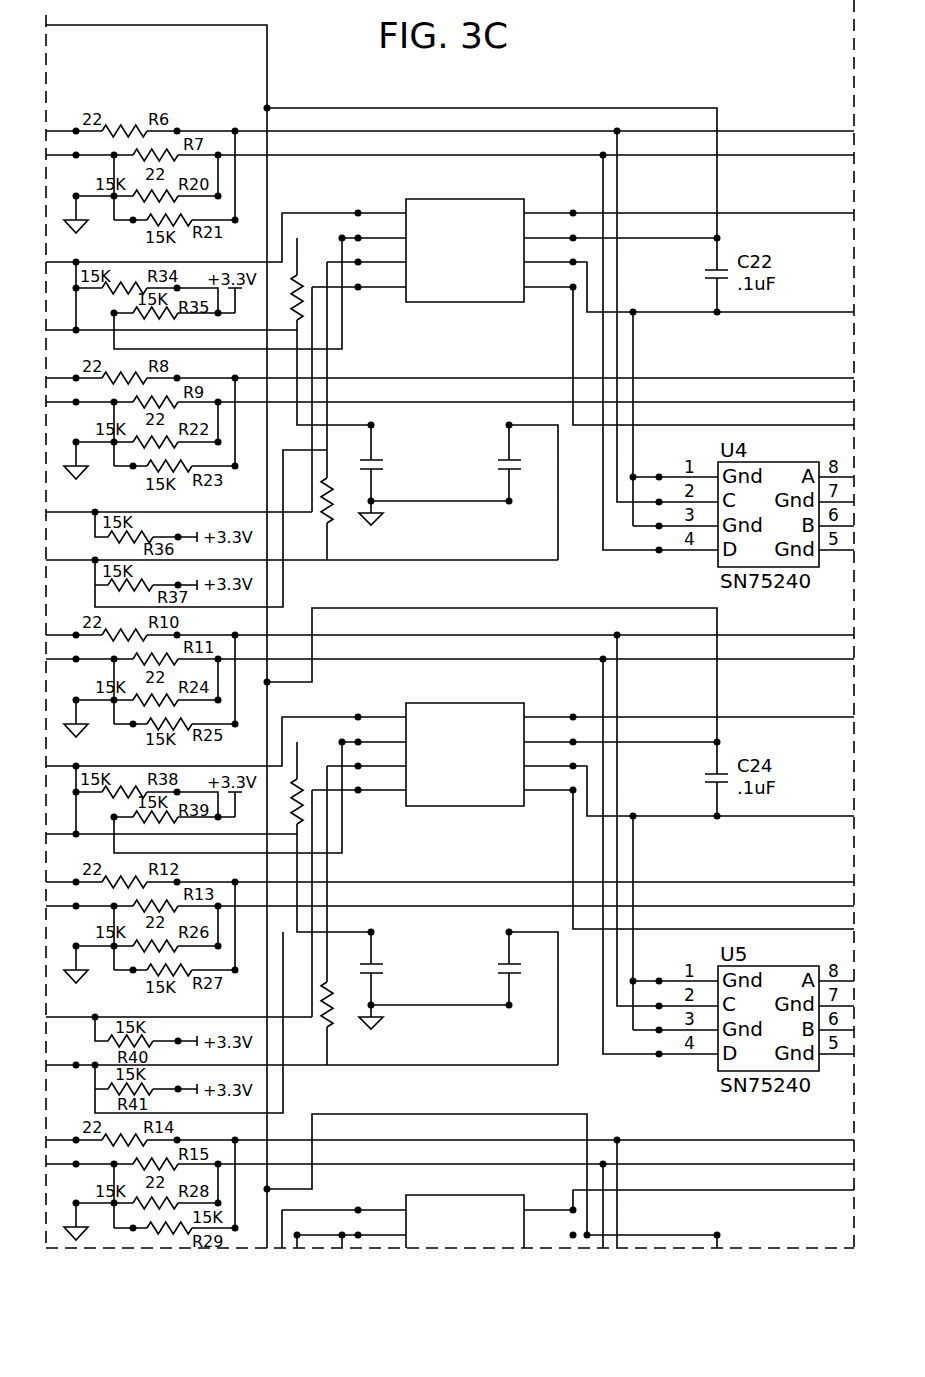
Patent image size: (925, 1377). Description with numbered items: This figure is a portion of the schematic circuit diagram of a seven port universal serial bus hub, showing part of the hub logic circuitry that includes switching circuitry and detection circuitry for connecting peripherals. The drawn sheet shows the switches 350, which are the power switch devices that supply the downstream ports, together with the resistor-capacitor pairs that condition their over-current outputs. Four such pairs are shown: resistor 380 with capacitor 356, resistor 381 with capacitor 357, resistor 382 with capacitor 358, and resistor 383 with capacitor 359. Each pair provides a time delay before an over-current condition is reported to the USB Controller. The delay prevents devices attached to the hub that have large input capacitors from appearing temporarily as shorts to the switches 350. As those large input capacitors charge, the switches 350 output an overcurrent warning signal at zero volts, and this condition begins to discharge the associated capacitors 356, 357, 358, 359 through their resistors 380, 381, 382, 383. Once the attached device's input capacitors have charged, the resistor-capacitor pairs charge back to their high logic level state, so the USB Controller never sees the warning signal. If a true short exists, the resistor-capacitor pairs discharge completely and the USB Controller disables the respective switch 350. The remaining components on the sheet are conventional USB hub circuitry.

The switch 350 is at (528, 1196).
The capacitor 356 is at (382, 456).
The capacitor 357 is at (503, 456).
The capacitor 358 is at (382, 960).
The capacitor 359 is at (503, 960).
The resistor 380 is at (303, 305).
The resistor 381 is at (325, 507).
The resistor 382 is at (303, 809).
The resistor 383 is at (325, 1012).